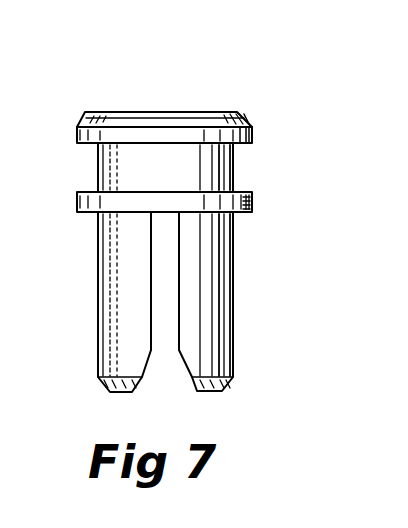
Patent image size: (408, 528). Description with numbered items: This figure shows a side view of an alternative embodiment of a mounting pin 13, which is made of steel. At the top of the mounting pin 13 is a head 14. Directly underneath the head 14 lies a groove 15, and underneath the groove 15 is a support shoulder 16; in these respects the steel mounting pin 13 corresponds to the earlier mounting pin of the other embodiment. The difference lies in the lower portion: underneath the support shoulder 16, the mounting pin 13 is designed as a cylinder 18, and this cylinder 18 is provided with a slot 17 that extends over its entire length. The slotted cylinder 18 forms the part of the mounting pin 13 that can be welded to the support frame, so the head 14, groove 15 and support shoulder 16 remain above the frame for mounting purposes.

The mounting pin 13 is at (66, 109).
The head 14 is at (161, 112).
The groove 15 is at (98, 165).
The support shoulder 16 is at (253, 200).
The slot 17 is at (178, 333).
The cylinder 18 is at (98, 305).